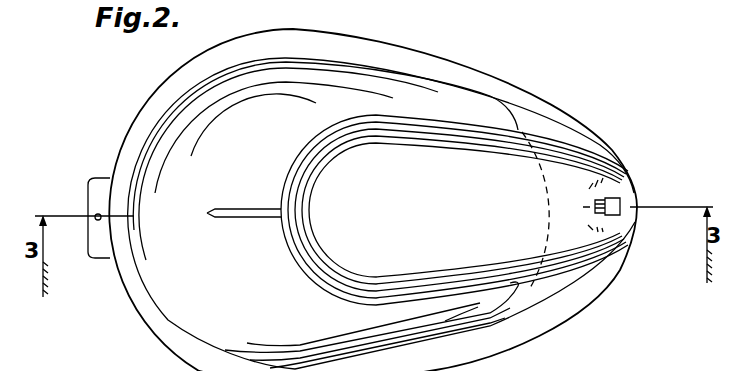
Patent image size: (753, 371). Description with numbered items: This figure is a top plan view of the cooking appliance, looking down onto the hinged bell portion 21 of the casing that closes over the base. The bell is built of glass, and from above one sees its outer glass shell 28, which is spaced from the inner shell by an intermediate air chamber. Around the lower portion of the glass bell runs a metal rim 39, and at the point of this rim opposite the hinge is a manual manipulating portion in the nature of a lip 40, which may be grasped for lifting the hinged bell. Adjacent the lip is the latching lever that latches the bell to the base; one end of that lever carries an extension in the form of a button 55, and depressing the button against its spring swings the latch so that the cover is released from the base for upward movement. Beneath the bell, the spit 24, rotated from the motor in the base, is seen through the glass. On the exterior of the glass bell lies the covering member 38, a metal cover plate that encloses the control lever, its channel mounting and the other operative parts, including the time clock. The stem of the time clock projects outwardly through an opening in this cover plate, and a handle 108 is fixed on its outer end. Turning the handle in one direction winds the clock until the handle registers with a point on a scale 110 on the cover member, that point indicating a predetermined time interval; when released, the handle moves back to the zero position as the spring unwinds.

The hinged bell portion 21 is at (259, 72).
The outer glass shell 28 is at (200, 105).
The metal rim 39 is at (145, 117).
The lip 40 is at (100, 192).
The button 55 is at (97, 221).
The spit 24 is at (253, 222).
The covering member 38 is at (410, 197).
The scale 110 is at (588, 200).
The handle 108 is at (620, 203).